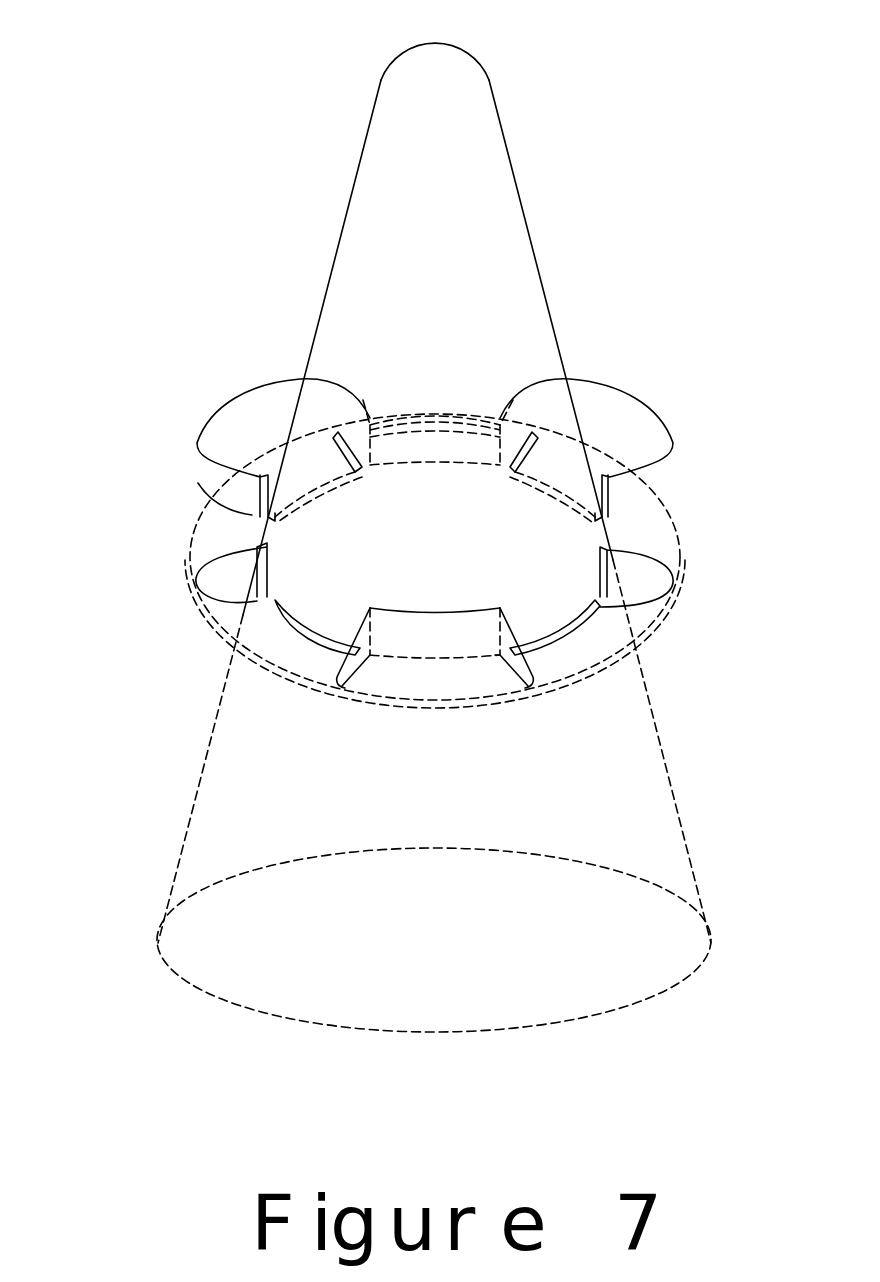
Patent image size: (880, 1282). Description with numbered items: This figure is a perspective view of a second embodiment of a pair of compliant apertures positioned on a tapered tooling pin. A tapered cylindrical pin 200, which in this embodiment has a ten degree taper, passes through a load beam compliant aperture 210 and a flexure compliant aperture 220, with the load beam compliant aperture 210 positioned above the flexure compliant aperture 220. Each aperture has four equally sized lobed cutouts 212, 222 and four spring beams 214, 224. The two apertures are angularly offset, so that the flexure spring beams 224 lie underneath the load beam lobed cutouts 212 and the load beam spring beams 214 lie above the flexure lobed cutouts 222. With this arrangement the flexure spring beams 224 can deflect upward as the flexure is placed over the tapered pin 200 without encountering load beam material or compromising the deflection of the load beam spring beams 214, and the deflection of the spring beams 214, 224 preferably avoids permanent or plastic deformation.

The tapered cylindrical pin 200 is at (537, 255).
The load beam compliant aperture 210 is at (600, 517).
The load beam lobed cutouts 212 is at (615, 418).
The load beam spring beams 214 is at (421, 637).
The flexure compliant aperture 220 is at (542, 645).
The flexure lobed cutouts 222 is at (495, 655).
The flexure spring beams 224 is at (312, 643).